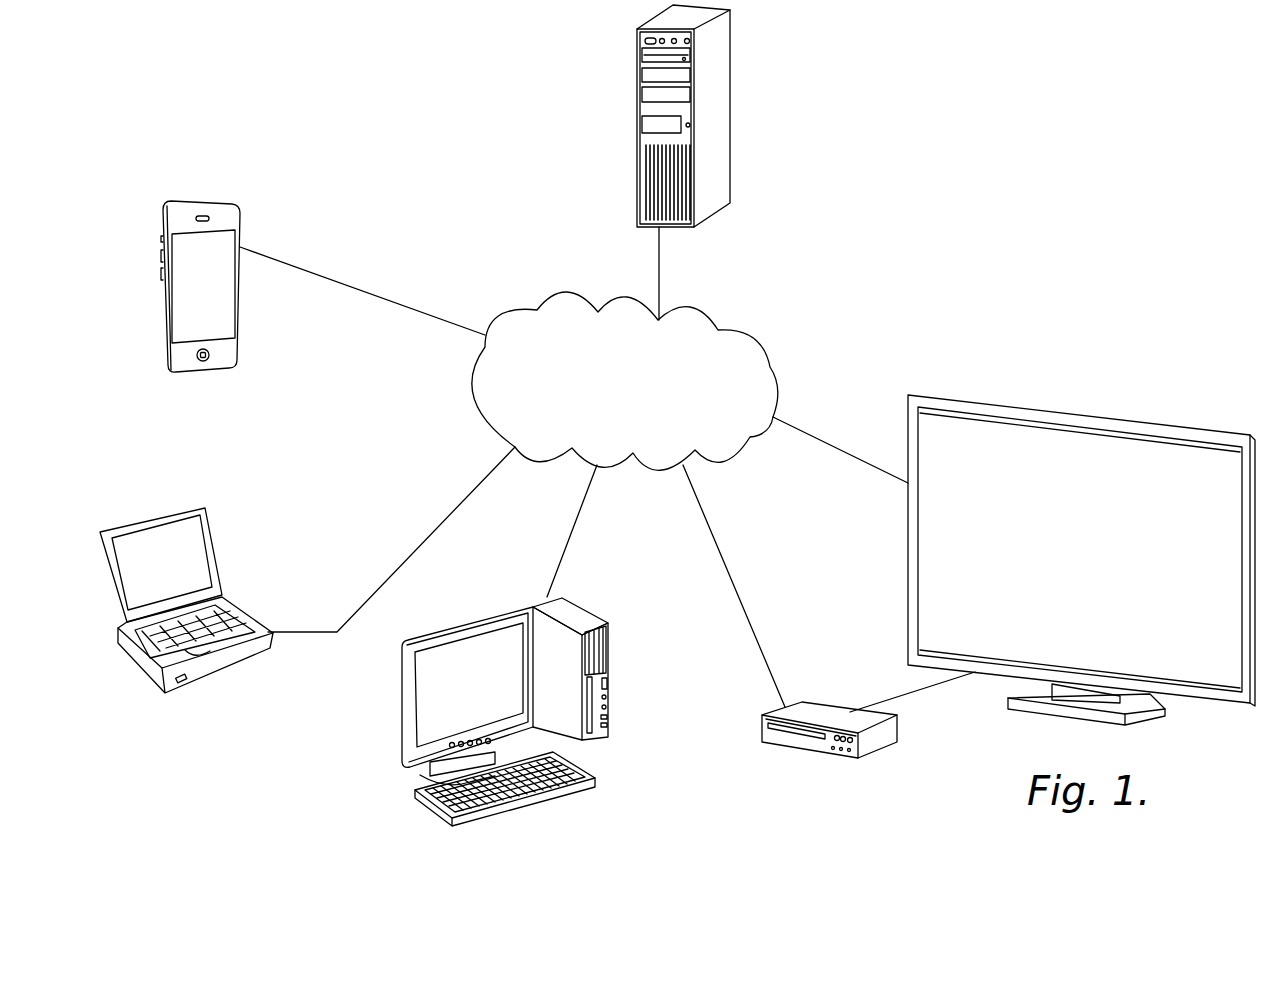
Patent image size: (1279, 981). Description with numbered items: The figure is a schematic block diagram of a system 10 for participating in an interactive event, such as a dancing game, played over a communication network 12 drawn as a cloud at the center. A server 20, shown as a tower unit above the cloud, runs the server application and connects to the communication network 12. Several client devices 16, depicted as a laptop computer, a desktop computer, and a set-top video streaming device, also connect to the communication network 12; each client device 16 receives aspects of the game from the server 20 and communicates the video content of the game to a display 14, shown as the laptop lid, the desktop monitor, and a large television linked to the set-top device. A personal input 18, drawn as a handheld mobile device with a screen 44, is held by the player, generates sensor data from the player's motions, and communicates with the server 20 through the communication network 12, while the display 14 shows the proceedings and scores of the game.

The system 10 is at (982, 170).
The communication network 12 is at (605, 396).
The display 14 is at (167, 537).
The client device 16 is at (227, 670).
The personal input 18 is at (237, 251).
The server 20 is at (725, 120).
The screen 44 is at (217, 304).